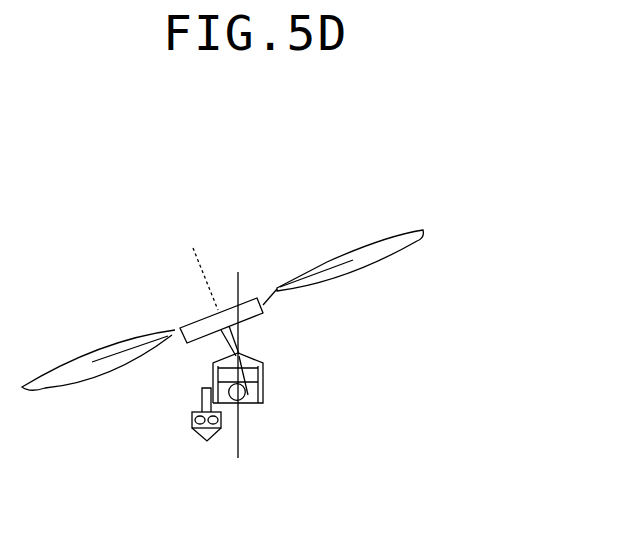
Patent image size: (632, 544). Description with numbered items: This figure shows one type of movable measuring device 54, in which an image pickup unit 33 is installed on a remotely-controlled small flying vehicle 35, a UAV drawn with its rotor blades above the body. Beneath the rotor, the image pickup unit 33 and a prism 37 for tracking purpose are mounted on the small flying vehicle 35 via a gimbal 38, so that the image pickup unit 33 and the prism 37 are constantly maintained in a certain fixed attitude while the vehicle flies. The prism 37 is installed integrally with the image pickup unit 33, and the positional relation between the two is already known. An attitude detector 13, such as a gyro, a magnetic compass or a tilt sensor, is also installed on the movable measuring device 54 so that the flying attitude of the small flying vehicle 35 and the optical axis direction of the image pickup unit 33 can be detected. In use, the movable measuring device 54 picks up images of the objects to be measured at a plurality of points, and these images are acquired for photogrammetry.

The movable measuring device 54 is at (276, 266).
The small flying vehicle 35 is at (198, 318).
The gimbal 38 is at (263, 363).
The image pickup unit 33 is at (247, 401).
The attitude detector 13 is at (192, 419).
The prism 37 is at (199, 436).